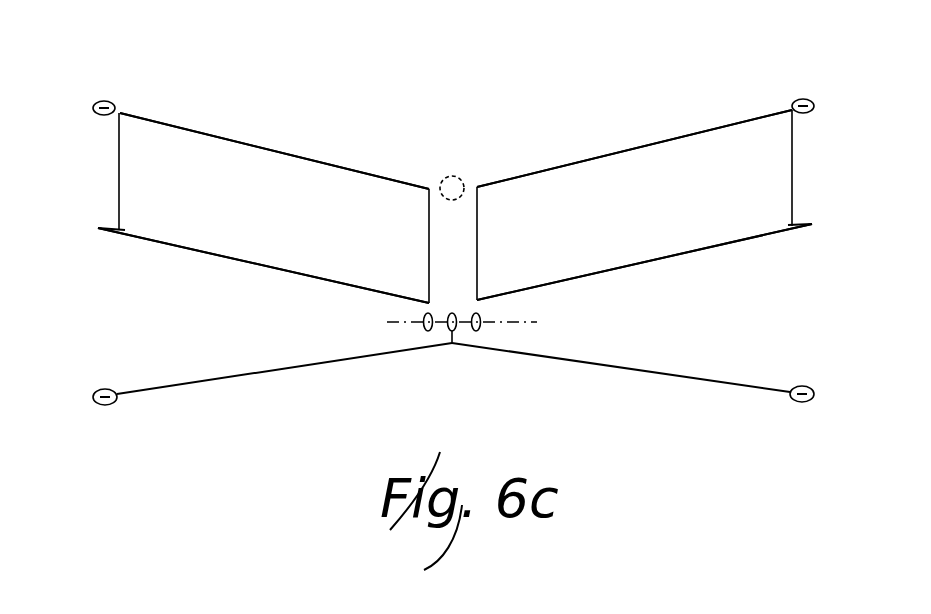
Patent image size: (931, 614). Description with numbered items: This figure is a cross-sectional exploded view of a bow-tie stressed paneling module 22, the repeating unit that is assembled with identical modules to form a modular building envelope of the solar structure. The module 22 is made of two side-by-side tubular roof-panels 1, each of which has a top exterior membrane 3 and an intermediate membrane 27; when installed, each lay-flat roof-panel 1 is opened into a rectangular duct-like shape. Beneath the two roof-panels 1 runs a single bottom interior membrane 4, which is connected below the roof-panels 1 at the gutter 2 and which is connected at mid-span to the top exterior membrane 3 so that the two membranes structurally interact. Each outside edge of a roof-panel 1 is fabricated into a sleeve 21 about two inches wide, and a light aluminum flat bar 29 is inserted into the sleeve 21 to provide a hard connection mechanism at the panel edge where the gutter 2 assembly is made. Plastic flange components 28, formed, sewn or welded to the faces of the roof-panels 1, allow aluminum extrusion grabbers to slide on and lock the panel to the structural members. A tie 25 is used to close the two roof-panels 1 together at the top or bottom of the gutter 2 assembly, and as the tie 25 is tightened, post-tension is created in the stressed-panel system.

The roof-panel 1 is at (345, 145).
The gutter 2 is at (463, 245).
The top exterior membrane 3 is at (222, 137).
The bottom interior membrane 4 is at (360, 360).
The sleeve 21 is at (112, 93).
The stressed paneling module 22 is at (213, 424).
The tie 25 is at (455, 168).
The intermediate membrane 27 is at (222, 258).
The flange component 28 is at (105, 232).
The aluminum flat bar 29 is at (527, 323).